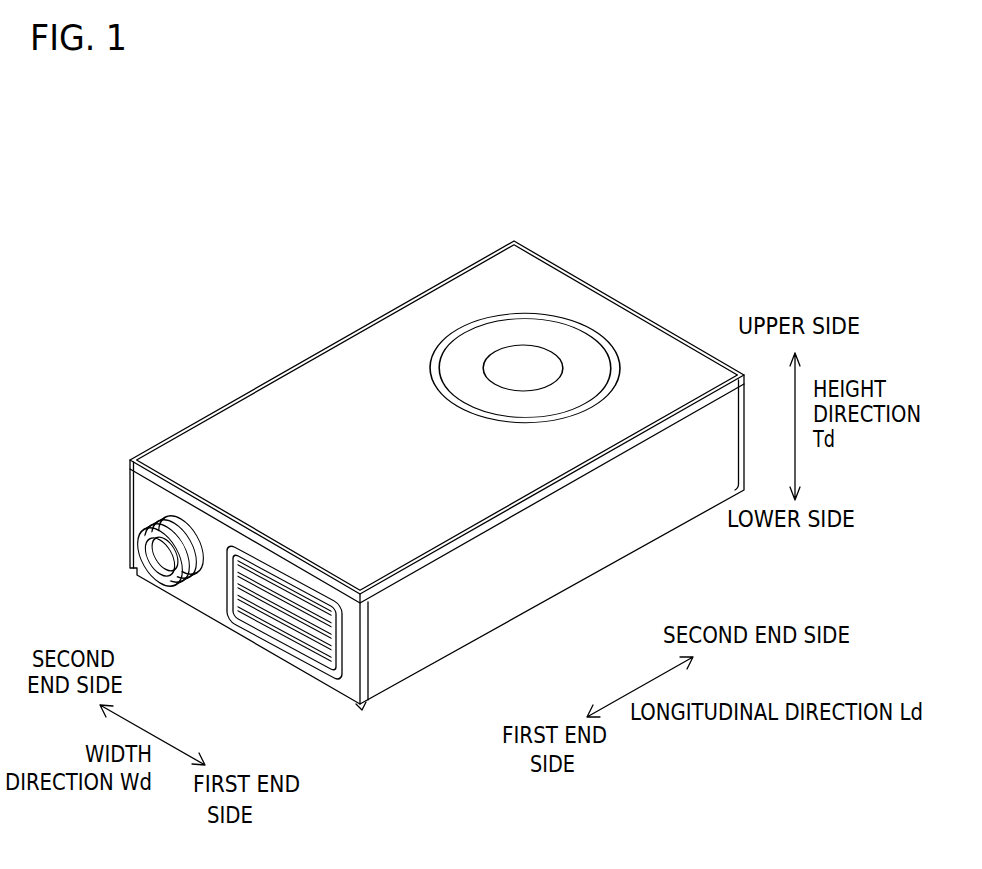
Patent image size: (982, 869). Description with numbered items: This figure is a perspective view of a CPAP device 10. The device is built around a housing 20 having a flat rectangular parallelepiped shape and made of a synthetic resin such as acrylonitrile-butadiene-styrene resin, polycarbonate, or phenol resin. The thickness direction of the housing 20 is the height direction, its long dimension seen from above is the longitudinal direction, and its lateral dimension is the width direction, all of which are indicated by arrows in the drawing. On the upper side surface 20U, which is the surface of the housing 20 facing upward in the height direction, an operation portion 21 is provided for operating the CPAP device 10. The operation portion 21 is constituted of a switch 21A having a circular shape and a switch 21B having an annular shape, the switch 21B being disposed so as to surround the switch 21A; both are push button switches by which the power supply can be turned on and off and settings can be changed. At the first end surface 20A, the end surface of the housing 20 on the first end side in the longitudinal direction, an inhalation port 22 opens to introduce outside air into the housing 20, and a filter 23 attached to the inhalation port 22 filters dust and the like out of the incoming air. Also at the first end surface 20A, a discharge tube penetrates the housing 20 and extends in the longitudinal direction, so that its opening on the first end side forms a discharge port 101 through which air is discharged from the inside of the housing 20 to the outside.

The CPAP device 10 is at (240, 328).
The housing 20 is at (620, 535).
The upper side surface 20U is at (348, 363).
The first end surface 20A is at (348, 685).
The operation portion 21 is at (525, 314).
The switch 21A is at (522, 363).
The switch 21B is at (573, 352).
The inhalation port 22 is at (268, 628).
The filter 23 is at (289, 651).
The discharge port 101 is at (140, 583).